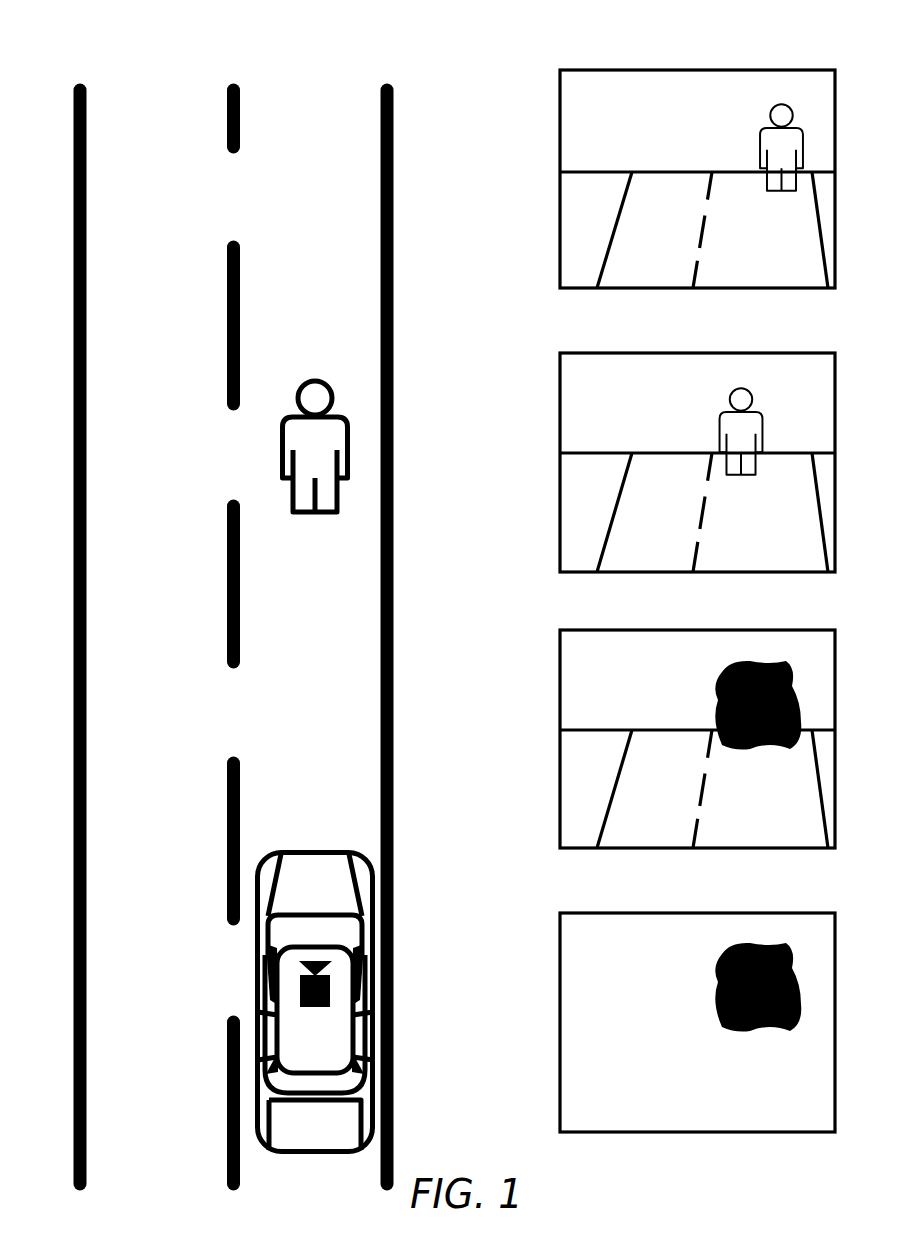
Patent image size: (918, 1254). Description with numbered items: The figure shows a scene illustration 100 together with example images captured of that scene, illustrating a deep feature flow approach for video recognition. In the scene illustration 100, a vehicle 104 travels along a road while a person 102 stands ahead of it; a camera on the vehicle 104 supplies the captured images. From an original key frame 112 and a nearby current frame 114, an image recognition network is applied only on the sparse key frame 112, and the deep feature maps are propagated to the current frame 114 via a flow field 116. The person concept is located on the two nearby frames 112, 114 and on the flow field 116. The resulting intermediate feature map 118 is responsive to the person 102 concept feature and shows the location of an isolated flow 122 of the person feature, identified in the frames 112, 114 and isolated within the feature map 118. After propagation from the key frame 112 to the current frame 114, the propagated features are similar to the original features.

The scene illustration 100 is at (223, 57).
The person 102 is at (316, 379).
The vehicle 104 is at (338, 851).
The key frame 112 is at (620, 69).
The current frame 114 is at (620, 352).
The flow field 116 is at (620, 629).
The feature map 118 is at (620, 912).
The isolated flow 122 is at (725, 667).